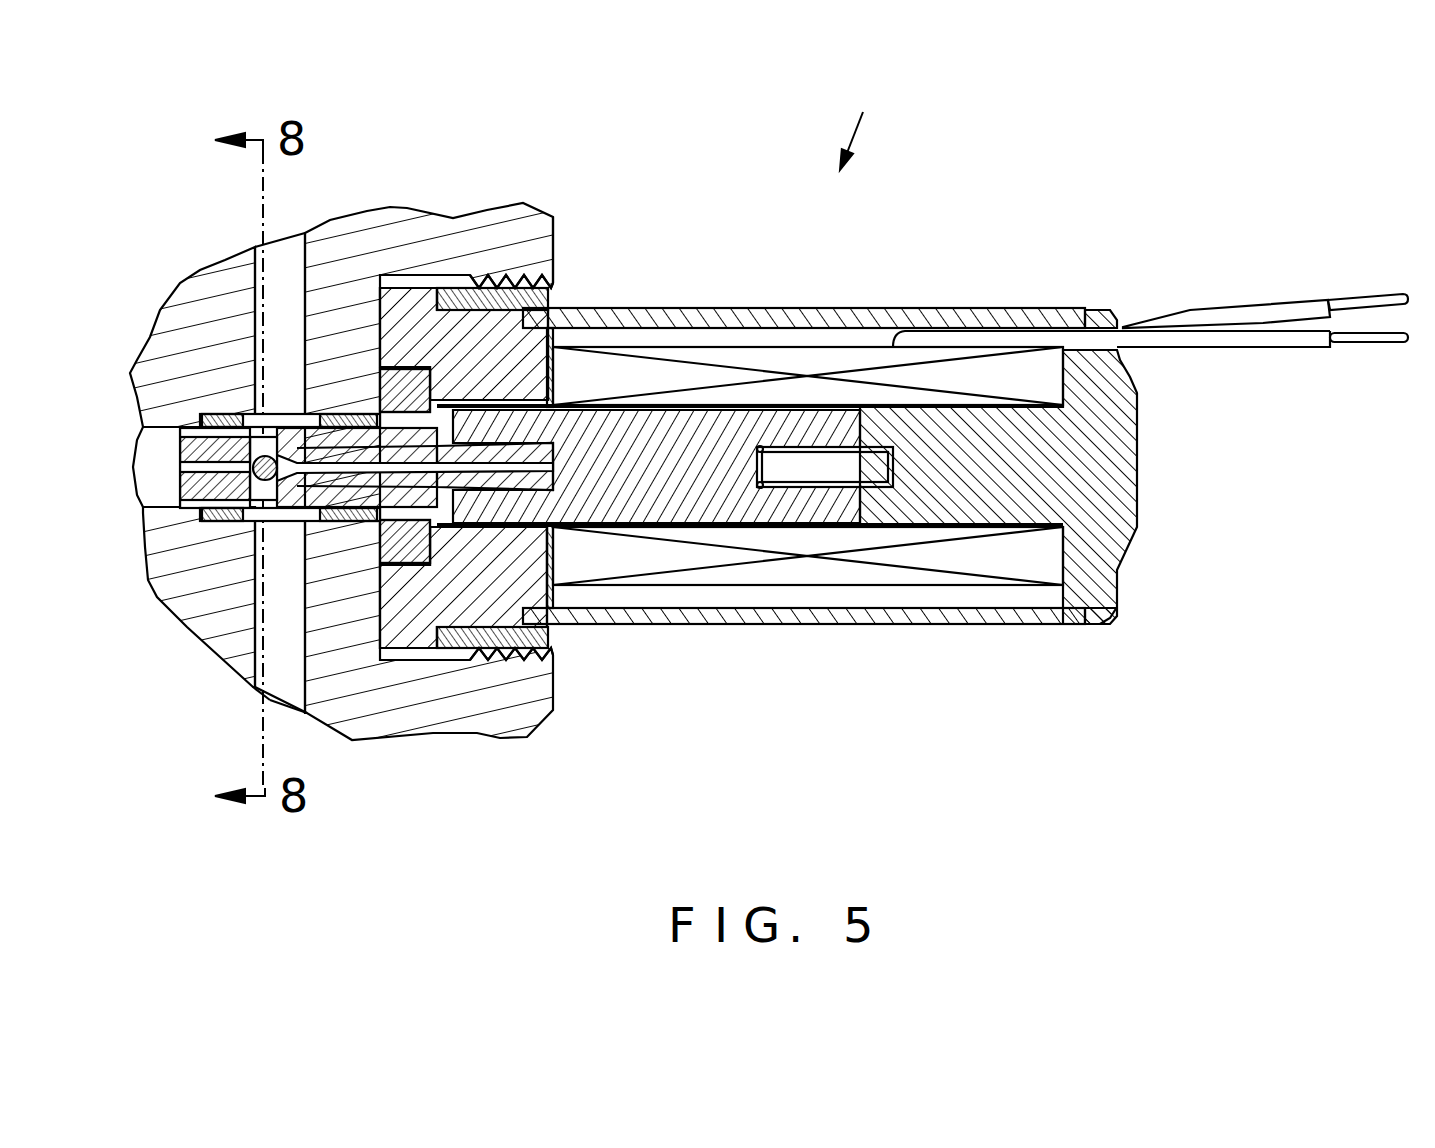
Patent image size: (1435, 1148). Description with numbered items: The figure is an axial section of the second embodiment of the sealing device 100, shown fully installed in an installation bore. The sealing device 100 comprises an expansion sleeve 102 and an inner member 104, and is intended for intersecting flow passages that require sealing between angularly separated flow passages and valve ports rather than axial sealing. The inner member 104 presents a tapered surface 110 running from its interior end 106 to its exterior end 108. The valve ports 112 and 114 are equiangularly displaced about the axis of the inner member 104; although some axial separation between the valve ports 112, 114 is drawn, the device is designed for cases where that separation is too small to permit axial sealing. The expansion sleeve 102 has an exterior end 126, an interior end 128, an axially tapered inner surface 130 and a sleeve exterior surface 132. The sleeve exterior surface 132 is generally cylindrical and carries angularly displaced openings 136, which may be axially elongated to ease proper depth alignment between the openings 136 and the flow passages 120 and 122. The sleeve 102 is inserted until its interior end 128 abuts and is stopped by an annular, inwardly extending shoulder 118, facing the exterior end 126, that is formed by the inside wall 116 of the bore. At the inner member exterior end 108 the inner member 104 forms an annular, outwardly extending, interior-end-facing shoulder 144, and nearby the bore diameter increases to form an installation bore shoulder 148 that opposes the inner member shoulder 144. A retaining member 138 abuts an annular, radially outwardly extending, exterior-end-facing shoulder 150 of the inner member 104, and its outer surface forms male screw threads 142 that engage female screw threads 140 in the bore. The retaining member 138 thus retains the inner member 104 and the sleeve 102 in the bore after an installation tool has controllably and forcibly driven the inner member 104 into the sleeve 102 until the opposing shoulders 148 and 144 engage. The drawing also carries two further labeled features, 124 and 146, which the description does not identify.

The sealing device 100 is at (866, 126).
The expansion sleeve 102 is at (216, 459).
The inner member 104 is at (439, 586).
The interior end 106 is at (121, 503).
The exterior end 108 is at (396, 665).
The tapered surface 110 is at (332, 679).
The valve port 112 is at (356, 283).
The valve port 114 is at (206, 620).
The inside wall 116 is at (415, 323).
The shoulder 118 is at (152, 568).
The flow passage 120 is at (314, 250).
The flow passage 122 is at (255, 652).
The plug 124 is at (156, 474).
The exterior end 126 is at (513, 213).
The interior end 128 is at (152, 342).
The axially tapered inner surface 130 is at (247, 293).
The sleeve exterior surface 132 is at (227, 547).
The openings 136 is at (242, 635).
The retaining member 138 is at (558, 282).
The female screw threads 140 is at (583, 248).
The male screw threads 142 is at (455, 507).
The shoulder 144 is at (453, 276).
The ball 146 is at (169, 459).
The installation bore shoulder 148 is at (465, 674).
The shoulder 150 is at (507, 729).